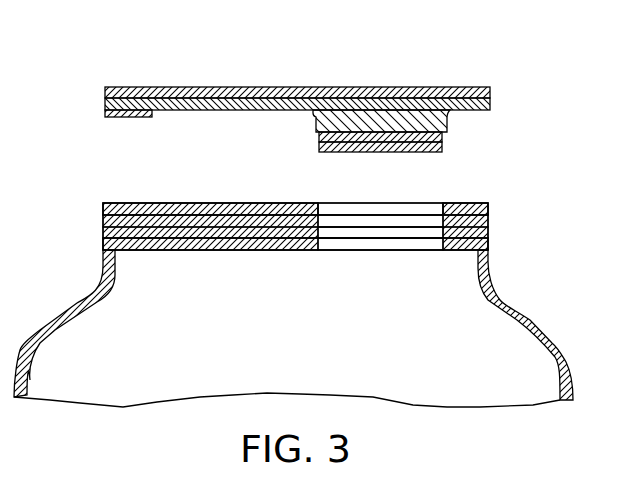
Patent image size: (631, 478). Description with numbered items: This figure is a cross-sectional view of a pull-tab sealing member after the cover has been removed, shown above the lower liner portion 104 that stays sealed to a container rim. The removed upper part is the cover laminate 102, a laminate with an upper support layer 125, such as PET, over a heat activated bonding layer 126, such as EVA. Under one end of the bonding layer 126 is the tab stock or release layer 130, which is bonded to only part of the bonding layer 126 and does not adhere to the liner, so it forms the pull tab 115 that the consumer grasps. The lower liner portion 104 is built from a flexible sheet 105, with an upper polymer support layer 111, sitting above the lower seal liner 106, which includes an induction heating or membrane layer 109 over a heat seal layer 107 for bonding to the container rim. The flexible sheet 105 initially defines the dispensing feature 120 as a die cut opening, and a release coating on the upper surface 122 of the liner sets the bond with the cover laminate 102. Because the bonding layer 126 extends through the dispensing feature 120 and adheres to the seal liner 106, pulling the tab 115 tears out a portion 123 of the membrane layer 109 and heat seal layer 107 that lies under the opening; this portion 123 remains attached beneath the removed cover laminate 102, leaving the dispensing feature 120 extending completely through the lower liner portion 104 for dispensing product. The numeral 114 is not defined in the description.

The cover laminate 102 is at (97, 87).
The pull tab 115 is at (180, 86).
The upper support layer 125 is at (490, 93).
The bonding layer 126 is at (490, 104).
The tab stock or release layer 130 is at (152, 114).
The lower seal liner 106 is at (305, 146).
The portion of the lower seal liner 123 is at (382, 149).
The induction heating or membrane layer 109 is at (443, 137).
The heat seal layer 107 is at (443, 147).
The lower liner portion 104 is at (73, 250).
The flexible sheet 105 is at (97, 216).
The upper surface of the lower liner portion 122 is at (150, 203).
The dispensing feature 120 is at (372, 243).
The upper polymer support layer 111 is at (488, 207).
The second layer of lower stack 114 is at (488, 220).